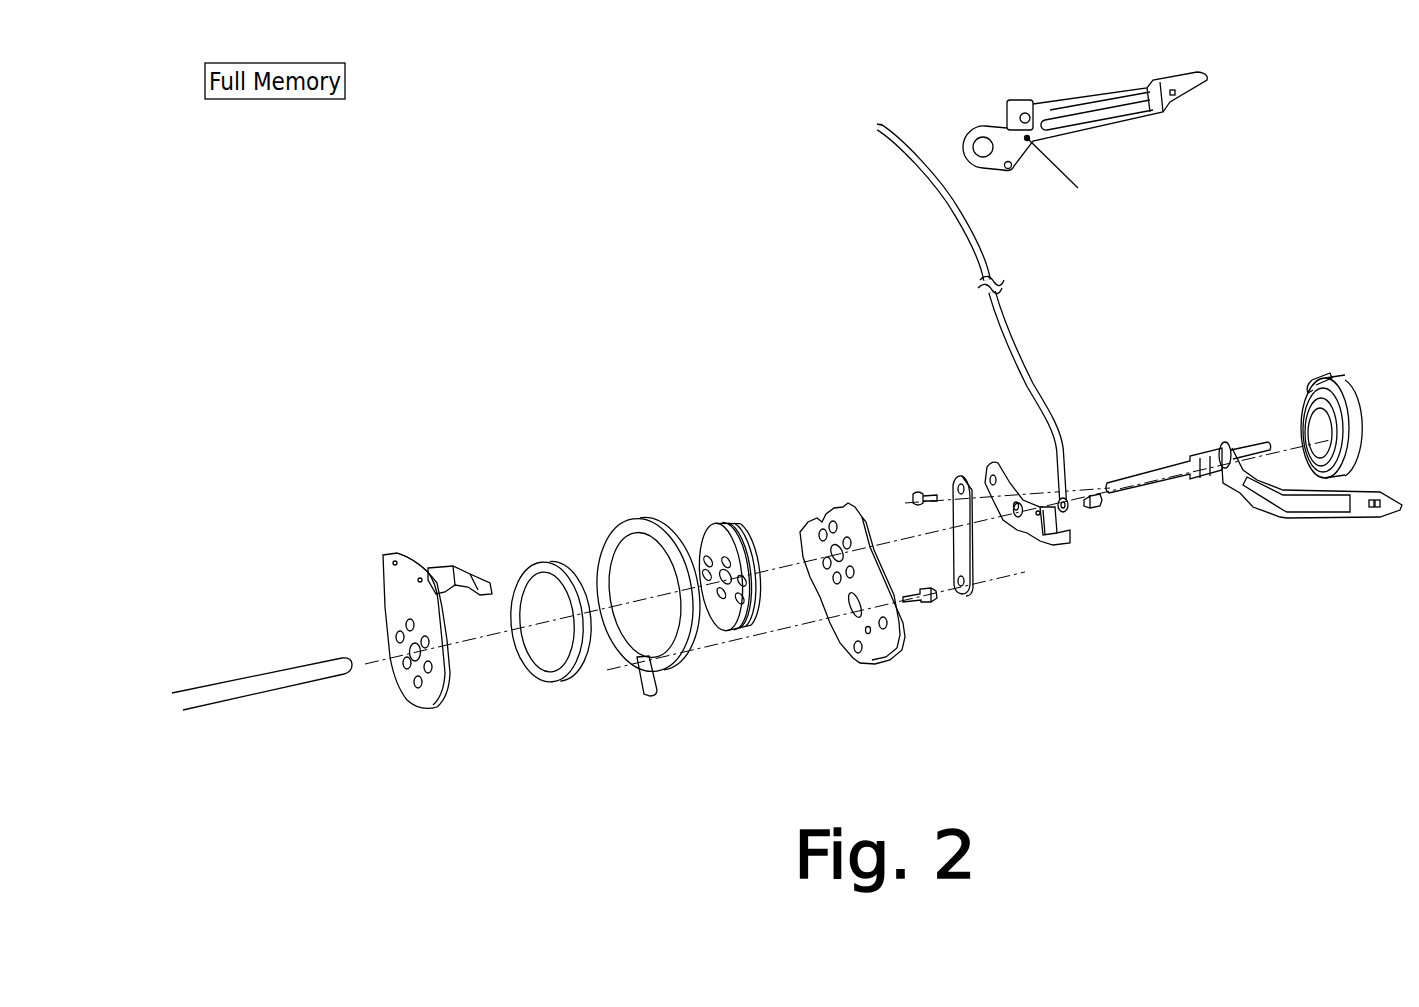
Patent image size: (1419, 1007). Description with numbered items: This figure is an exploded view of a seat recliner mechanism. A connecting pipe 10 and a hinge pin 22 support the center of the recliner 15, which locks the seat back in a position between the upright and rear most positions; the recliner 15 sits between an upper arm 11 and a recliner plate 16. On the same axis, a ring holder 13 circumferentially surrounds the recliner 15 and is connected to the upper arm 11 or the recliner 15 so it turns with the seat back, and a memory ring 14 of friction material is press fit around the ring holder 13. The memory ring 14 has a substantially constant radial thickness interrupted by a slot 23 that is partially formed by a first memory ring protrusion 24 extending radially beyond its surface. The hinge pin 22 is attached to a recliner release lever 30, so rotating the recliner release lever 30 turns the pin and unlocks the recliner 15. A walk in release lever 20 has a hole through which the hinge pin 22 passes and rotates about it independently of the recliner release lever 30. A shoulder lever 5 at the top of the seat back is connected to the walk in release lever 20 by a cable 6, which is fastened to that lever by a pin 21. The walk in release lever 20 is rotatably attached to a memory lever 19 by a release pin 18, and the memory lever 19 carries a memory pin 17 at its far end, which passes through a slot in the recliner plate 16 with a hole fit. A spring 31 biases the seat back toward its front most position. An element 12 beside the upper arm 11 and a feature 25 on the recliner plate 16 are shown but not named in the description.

The shoulder lever 5 is at (1085, 97).
The cable 6 is at (1023, 367).
The connecting pipe 10 is at (288, 681).
The upper arm 11 is at (402, 600).
The clip bracket 12 is at (448, 572).
The ring holder 13 is at (542, 568).
The memory ring 14 is at (654, 600).
The recliner 15 is at (722, 522).
The recliner plate 16 is at (874, 612).
The memory pin 17 is at (925, 597).
The release pin 18 is at (926, 494).
The memory lever 19 is at (960, 545).
The walk in release lever 20 is at (1067, 537).
The pin 21 is at (1092, 502).
The hinge pin 22 is at (1157, 478).
The slot 23 is at (650, 666).
The first memory ring protrusion 24 is at (637, 678).
The slot 25 is at (855, 609).
The recliner release lever 30 is at (1316, 503).
The spring 31 is at (1325, 366).